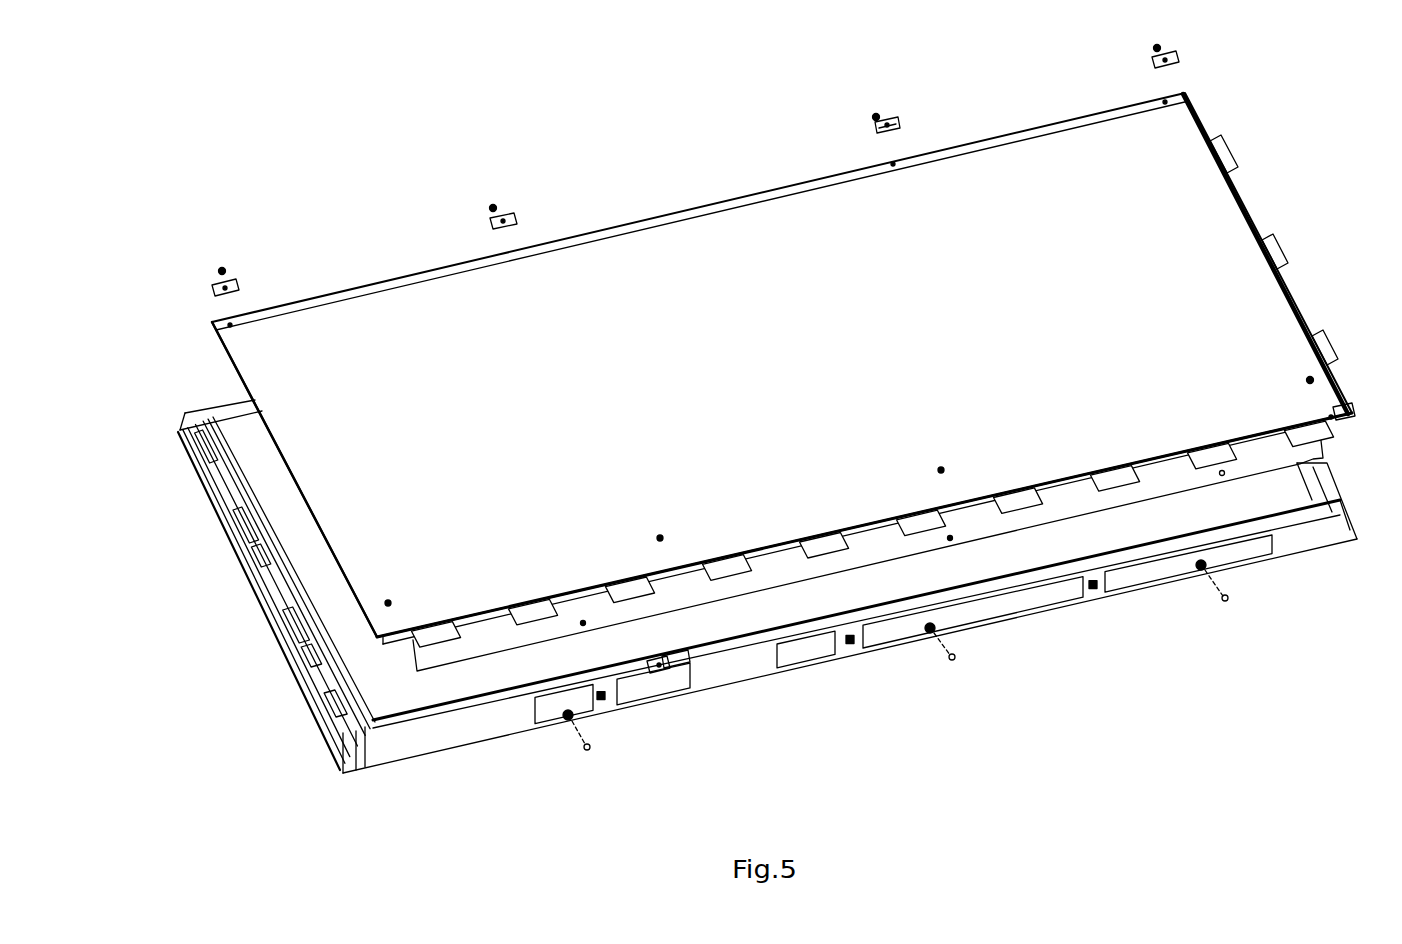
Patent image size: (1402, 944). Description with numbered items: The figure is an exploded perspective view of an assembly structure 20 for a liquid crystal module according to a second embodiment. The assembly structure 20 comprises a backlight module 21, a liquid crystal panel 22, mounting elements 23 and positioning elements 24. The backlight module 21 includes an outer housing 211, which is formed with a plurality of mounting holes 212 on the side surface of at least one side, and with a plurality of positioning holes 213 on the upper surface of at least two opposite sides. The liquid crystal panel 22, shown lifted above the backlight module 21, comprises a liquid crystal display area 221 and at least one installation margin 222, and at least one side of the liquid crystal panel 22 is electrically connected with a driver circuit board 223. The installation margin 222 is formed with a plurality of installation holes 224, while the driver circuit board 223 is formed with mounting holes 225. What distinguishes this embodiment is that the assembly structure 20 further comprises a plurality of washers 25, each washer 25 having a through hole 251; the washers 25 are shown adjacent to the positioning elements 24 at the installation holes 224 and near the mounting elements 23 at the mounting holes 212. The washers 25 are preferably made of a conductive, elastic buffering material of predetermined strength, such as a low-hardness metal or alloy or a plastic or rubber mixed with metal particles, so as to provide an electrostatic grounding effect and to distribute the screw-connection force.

The assembly structure 20 is at (194, 207).
The backlight module 21 is at (246, 601).
The outer housing 211 is at (292, 655).
The mounting holes 212 is at (568, 721).
The positioning holes 213 is at (676, 659).
The liquid crystal panel 22 is at (205, 350).
The liquid crystal display area 221 is at (262, 372).
The installation margin 222 is at (410, 280).
The driver circuit board 223 is at (747, 583).
The installation holes 224 is at (510, 255).
The mounting holes 225 is at (583, 623).
The mounting elements 23 is at (588, 751).
The positioning elements 24 is at (494, 204).
The washers 25 is at (900, 128).
The through hole 251 is at (878, 128).